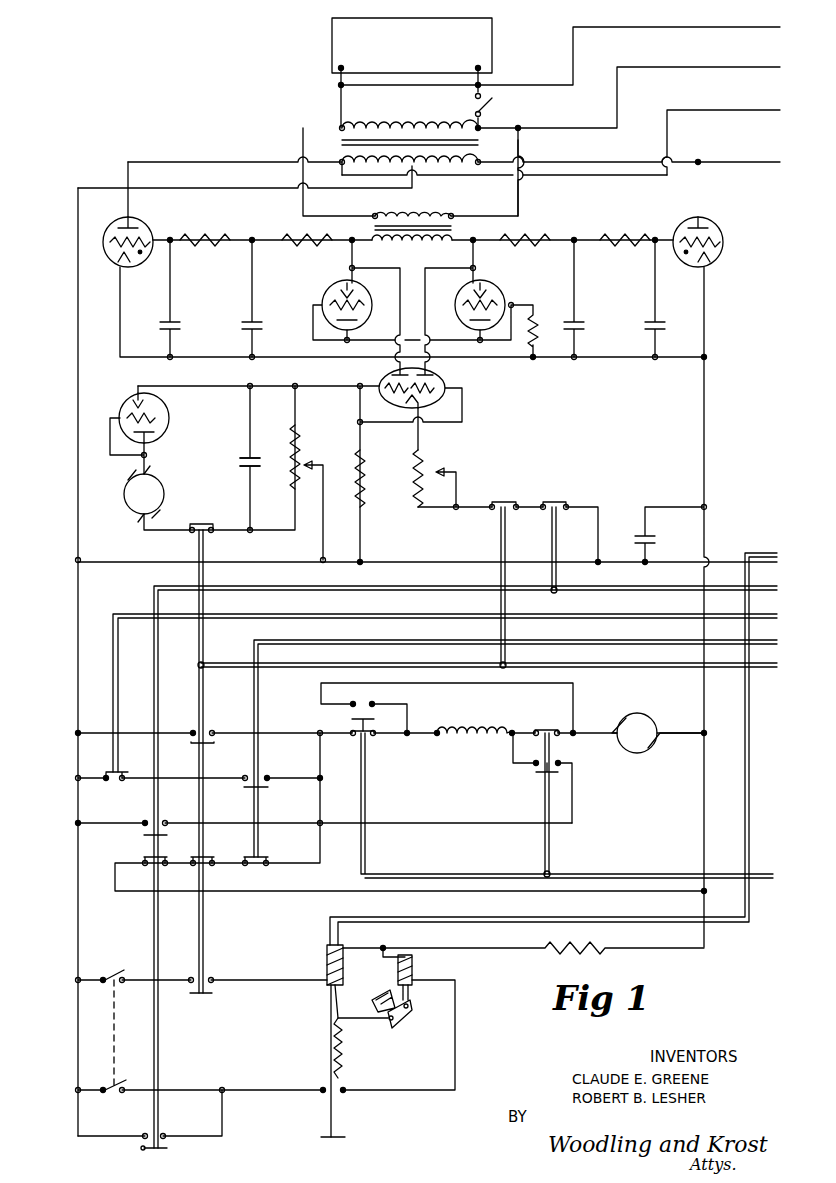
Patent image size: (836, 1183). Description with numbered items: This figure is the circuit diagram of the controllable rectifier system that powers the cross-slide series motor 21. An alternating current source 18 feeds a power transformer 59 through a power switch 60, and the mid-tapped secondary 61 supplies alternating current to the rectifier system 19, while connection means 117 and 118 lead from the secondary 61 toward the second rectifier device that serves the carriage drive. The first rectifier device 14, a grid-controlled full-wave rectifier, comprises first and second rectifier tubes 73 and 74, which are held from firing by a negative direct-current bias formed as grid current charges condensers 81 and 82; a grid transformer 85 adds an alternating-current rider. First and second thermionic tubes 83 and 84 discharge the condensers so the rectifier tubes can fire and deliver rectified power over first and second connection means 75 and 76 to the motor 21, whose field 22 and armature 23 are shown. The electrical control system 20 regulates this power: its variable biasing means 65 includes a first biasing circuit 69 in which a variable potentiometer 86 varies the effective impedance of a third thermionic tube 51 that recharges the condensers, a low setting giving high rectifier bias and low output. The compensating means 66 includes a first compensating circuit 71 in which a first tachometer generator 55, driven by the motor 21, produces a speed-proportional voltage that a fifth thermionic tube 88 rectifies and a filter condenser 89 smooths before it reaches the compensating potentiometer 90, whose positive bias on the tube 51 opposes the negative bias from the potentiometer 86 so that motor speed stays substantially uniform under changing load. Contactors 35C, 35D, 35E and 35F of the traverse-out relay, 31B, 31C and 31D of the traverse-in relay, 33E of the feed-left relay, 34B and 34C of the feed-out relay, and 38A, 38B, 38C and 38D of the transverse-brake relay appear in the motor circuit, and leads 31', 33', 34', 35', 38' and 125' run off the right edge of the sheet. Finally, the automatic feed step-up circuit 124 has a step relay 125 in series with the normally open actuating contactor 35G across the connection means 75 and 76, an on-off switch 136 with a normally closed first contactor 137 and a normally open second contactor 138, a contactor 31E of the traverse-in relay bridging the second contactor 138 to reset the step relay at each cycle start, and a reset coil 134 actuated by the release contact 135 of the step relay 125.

The alternating current source 18 is at (492, 43).
The power switch 60 is at (487, 106).
The power transformer 59 is at (508, 155).
The mid-tapped secondary 61 is at (462, 170).
The connection means 117 is at (770, 114).
The connection means 118 is at (774, 166).
The first rectifier tube 73 is at (108, 228).
The second rectifier tube 74 is at (718, 232).
The grid transformer 85 is at (482, 237).
The first thermionic tube 83 is at (328, 288).
The second thermionic tube 84 is at (496, 296).
The condenser 81 is at (266, 312).
The condenser 82 is at (578, 320).
The first rectifier device 14 is at (390, 328).
The rectifier system 19 is at (748, 291).
The electrical control system 20 is at (744, 446).
The first connection means 75 is at (78, 470).
The third thermionic tube 51 is at (438, 378).
The fifth thermionic tube 88 is at (160, 410).
The first tachometer generator 55 is at (160, 486).
The compensating means 66 is at (124, 531).
The filter condenser 89 is at (235, 460).
The first compensating circuit 71 is at (276, 505).
The compensating potentiometer 90 is at (302, 446).
The variable potentiometer 86 is at (424, 456).
The variable biasing means 65 is at (492, 453).
The first biasing circuit 69 is at (430, 539).
The contactor 35D is at (510, 500).
The contactor 31B is at (556, 498).
The contactor 35C is at (210, 506).
The conductor 125' is at (553, 739).
The conductor 31' is at (465, 858).
The conductor 33' is at (445, 683).
The conductor 34' is at (515, 739).
The conductor 35' is at (489, 656).
The contactor 38A is at (350, 716).
The contactor 38C is at (368, 736).
The field 22 is at (486, 726).
The contactor 38D is at (554, 722).
The contactor 38B is at (538, 774).
The armature 23 is at (653, 722).
The cross-slide motor 21 is at (606, 763).
The second connection means 76 is at (704, 780).
The contactor 35E is at (205, 745).
The contactor 34B is at (258, 785).
The contactor 33E is at (120, 778).
The contactor 31C is at (140, 832).
The contactor 31D is at (140, 855).
The contactor 35F is at (205, 855).
The contactor 34C is at (258, 855).
The conductor 38' is at (764, 863).
The first contactor 137 is at (116, 962).
The on-off switch 136 is at (108, 1036).
The second contactor 138 is at (98, 1079).
The automatic feed step-up circuit 124 is at (240, 1059).
The actuating contactor 35G is at (206, 995).
The contactor 31E is at (160, 1150).
The step relay 125 is at (309, 1041).
The reset coil 134 is at (414, 968).
The release contact 135 is at (338, 1140).